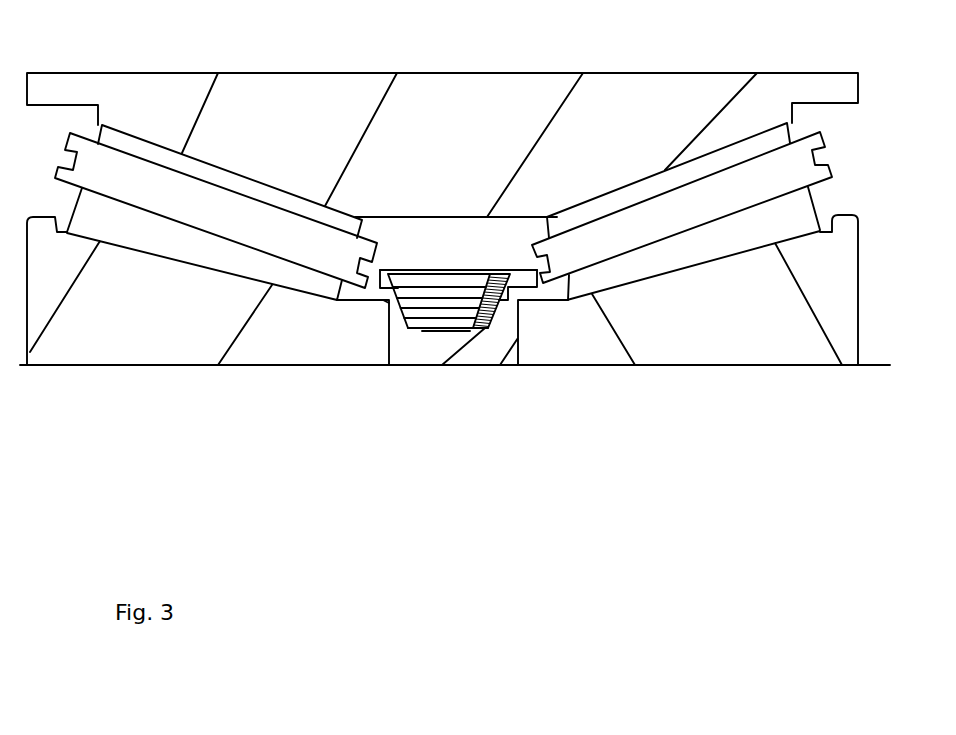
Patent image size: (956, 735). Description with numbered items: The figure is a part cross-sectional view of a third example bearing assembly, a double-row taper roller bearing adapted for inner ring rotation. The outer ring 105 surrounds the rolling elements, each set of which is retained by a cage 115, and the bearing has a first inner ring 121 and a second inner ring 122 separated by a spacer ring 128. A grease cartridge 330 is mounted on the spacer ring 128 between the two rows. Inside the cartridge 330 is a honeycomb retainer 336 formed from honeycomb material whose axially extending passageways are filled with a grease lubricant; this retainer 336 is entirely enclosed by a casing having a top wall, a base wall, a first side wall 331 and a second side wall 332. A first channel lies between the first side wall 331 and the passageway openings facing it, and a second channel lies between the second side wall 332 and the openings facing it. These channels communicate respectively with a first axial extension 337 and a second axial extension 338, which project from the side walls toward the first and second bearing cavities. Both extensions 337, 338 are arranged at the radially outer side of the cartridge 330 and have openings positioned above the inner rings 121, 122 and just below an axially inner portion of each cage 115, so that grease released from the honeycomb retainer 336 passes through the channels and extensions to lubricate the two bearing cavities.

The outer ring 105 is at (308, 138).
The cage 115 is at (157, 188).
The first inner ring 121 is at (218, 317).
The second inner ring 122 is at (677, 317).
The spacer ring 128 is at (417, 348).
The grease cartridge 330 is at (457, 258).
The first side wall 331 is at (384, 295).
The second side wall 332 is at (522, 300).
The honeycomb retainer 336 is at (445, 312).
The first axial extension 337 is at (380, 268).
The second axial extension 338 is at (512, 275).